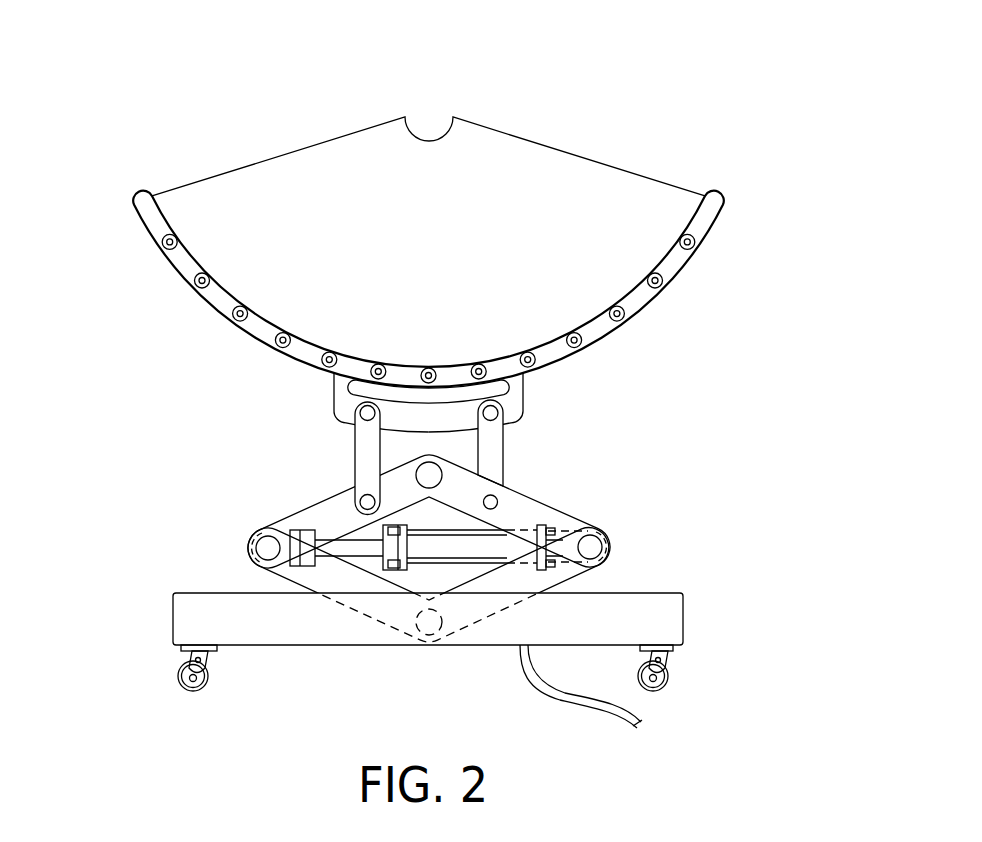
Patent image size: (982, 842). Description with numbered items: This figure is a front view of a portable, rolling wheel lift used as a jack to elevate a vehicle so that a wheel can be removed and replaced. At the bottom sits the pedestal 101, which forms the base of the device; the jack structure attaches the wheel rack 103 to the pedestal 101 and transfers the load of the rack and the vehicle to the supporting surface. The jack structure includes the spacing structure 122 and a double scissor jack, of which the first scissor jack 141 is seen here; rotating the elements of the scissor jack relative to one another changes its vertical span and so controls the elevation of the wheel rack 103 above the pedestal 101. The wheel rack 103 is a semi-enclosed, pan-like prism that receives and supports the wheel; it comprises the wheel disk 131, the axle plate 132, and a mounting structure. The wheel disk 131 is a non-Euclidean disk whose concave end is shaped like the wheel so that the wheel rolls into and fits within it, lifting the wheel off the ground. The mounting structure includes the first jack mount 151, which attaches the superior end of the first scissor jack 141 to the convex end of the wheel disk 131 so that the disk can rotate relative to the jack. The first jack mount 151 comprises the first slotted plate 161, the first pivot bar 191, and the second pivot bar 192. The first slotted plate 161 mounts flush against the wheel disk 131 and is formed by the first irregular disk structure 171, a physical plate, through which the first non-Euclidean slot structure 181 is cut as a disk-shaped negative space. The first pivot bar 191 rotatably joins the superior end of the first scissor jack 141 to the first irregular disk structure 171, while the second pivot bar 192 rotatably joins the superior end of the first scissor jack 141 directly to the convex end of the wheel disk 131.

The pedestal 101 is at (173, 613).
The wheel rack 103 is at (233, 172).
The spacing structure 122 is at (418, 556).
The wheel disk 131 is at (728, 212).
The axle plate 132 is at (540, 192).
The first scissor jack 141 is at (392, 573).
The first jack mount 151 is at (270, 422).
The first slotted plate 161 is at (317, 395).
The first irregular disk structure 171 is at (523, 387).
The first non-Euclidean slot structure 181 is at (417, 397).
The first pivot bar 191 is at (353, 460).
The second pivot bar 192 is at (495, 453).